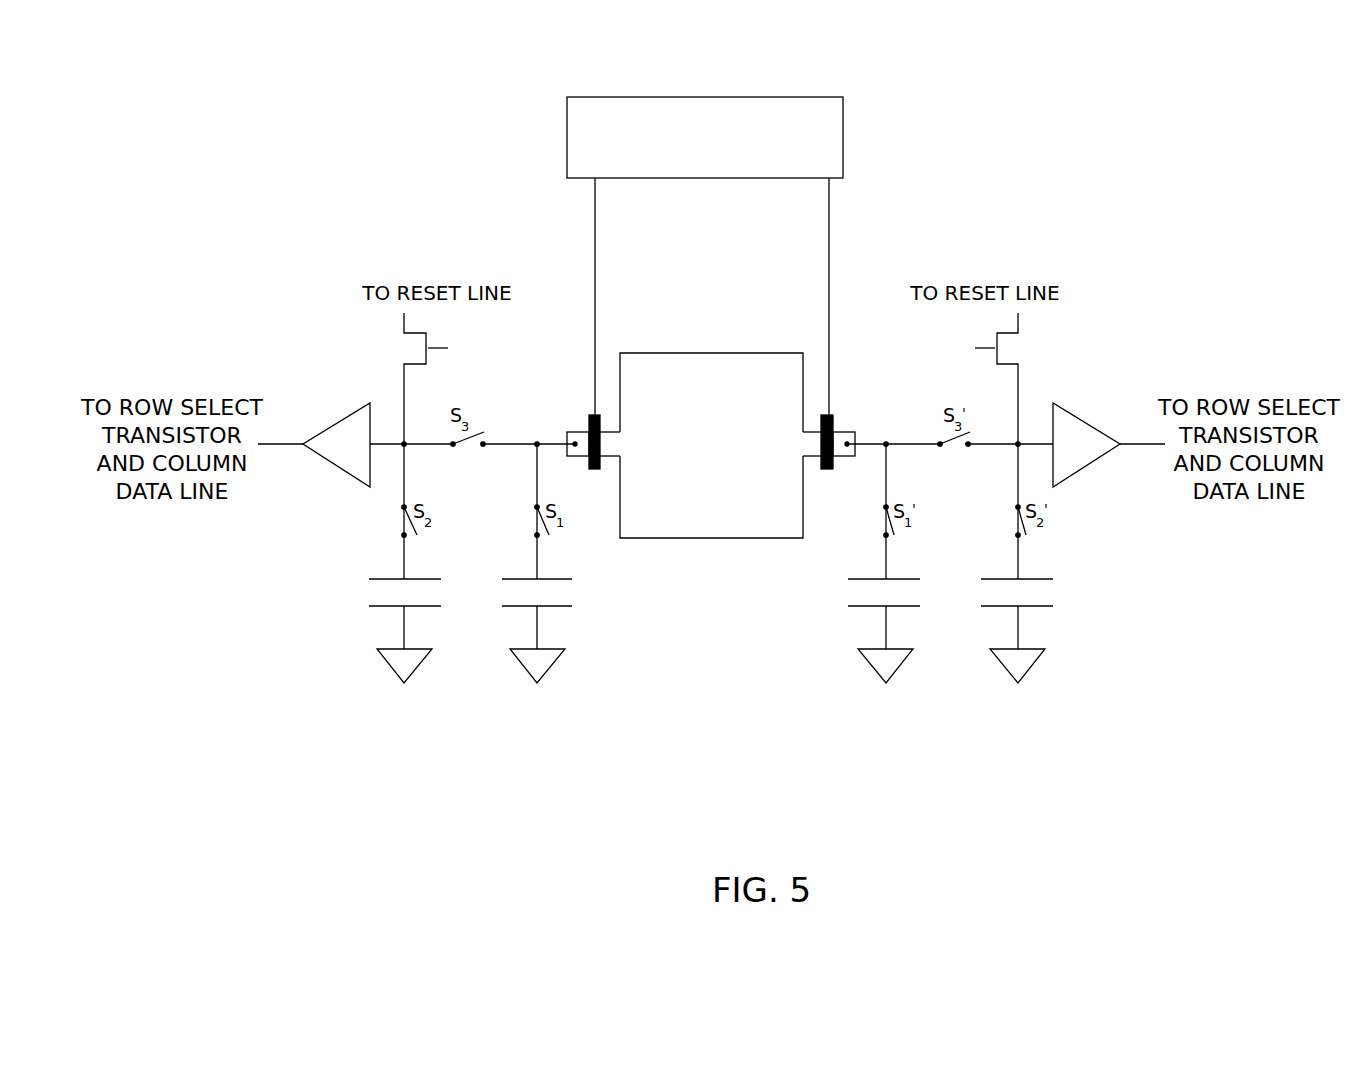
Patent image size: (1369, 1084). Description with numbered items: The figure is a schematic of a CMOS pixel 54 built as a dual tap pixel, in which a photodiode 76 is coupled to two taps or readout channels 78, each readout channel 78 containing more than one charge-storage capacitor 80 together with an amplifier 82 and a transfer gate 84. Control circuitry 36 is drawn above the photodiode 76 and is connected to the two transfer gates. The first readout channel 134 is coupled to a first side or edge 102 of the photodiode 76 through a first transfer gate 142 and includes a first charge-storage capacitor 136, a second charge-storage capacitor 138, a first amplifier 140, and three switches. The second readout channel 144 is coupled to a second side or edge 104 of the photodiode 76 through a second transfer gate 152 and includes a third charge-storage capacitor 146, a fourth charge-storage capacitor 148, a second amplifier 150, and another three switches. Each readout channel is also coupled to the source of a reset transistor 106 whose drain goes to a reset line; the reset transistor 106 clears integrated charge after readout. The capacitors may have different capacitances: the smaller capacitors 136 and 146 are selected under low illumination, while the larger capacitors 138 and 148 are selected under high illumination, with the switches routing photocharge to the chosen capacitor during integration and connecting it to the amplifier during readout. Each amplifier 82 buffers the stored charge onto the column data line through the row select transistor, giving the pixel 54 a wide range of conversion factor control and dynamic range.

The control circuitry 36 is at (845, 131).
The pixel 54 is at (706, 646).
The photodiode 76 is at (710, 350).
The readout channel 78 is at (710, 401).
The charge-storage capacitor 80 is at (709, 609).
The amplifier 82 is at (725, 485).
The transfer gate 84 is at (711, 509).
The first side or edge of the photodiode 102 is at (611, 354).
The second side or edge of the photodiode 104 is at (810, 354).
The reset transistor 106 is at (428, 341).
The first readout channel 134 is at (310, 373).
The first charge-storage capacitor 136 is at (508, 608).
The second charge-storage capacitor 138 is at (375, 608).
The first amplifier 140 is at (330, 476).
The first transfer gate 142 is at (600, 470).
The second readout channel 144 is at (1113, 373).
The third charge-storage capacitor 146 is at (903, 607).
The fourth charge-storage capacitor 148 is at (1040, 607).
The second amplifier 150 is at (1098, 476).
The second transfer gate 152 is at (822, 470).